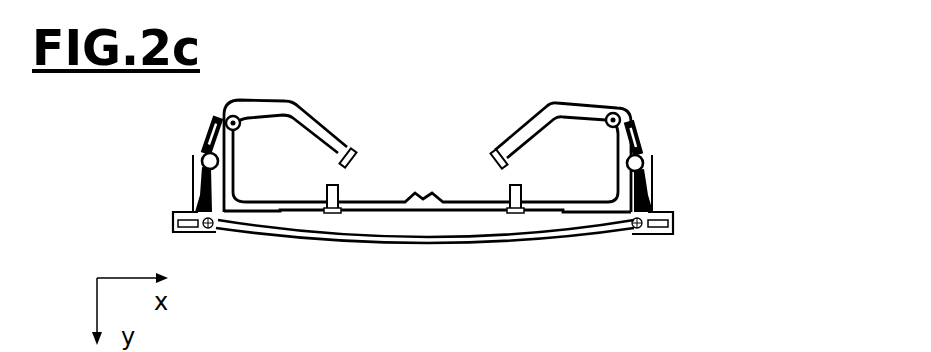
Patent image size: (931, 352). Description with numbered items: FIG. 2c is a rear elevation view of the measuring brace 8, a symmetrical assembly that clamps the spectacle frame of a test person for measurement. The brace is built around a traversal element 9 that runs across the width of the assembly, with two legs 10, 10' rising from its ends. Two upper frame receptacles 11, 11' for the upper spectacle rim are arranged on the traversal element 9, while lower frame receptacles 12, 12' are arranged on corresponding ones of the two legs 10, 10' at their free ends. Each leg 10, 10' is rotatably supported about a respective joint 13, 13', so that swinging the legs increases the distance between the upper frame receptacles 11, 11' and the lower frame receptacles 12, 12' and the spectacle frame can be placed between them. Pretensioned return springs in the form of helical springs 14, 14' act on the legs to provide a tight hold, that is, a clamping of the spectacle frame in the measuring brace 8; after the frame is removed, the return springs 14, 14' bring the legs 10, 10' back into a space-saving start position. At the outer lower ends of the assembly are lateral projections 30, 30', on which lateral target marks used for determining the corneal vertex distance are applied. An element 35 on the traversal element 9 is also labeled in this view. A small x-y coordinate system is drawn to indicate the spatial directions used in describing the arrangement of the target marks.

The measuring brace 8 is at (456, 272).
The traversal element 9 is at (400, 243).
The leg 10 is at (285, 110).
The leg 10' is at (563, 111).
The upper frame receptacle 11 is at (367, 166).
The upper frame receptacle 11' is at (477, 175).
The lower frame receptacle 12 is at (367, 111).
The lower frame receptacle 12' is at (483, 120).
The joint 13 is at (155, 146).
The joint 13' is at (695, 149).
The return spring 14 is at (165, 124).
The return spring 14' is at (683, 122).
The lateral projection 30 is at (142, 202).
The lateral projection 30' is at (664, 245).
The flange 35 is at (352, 238).